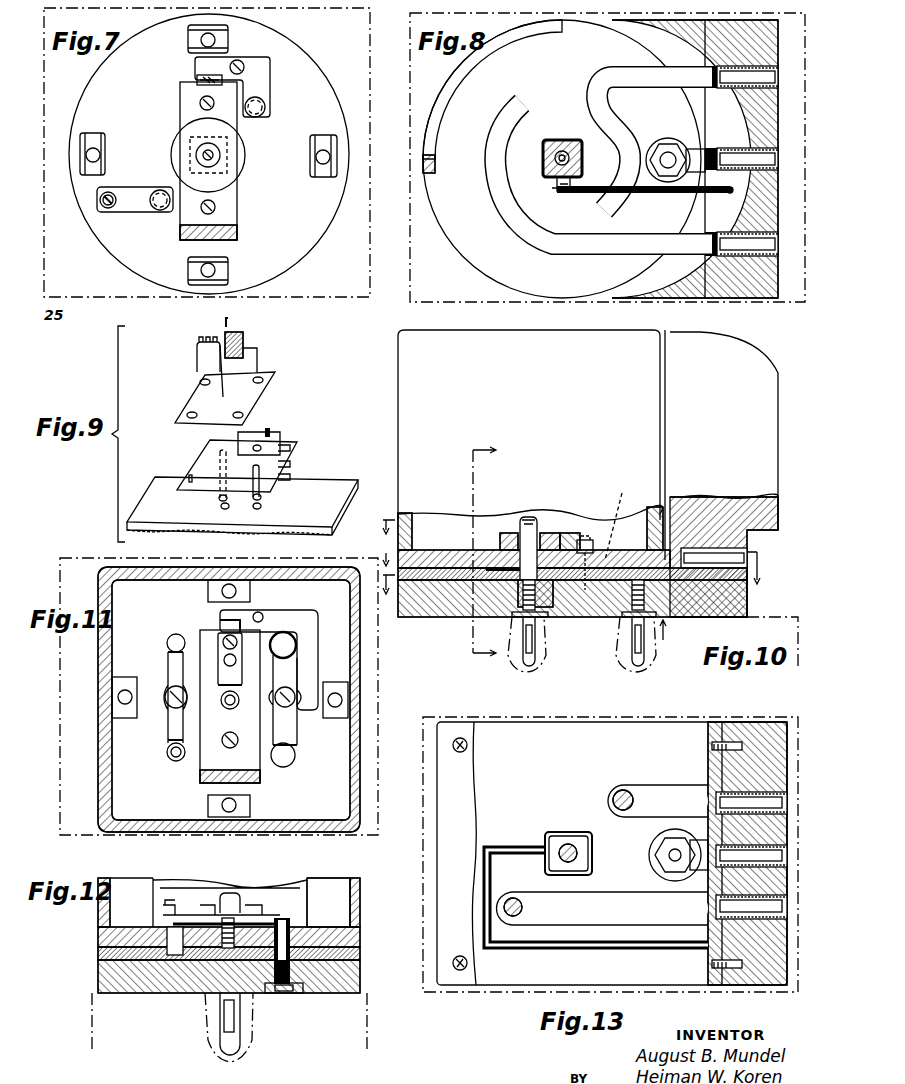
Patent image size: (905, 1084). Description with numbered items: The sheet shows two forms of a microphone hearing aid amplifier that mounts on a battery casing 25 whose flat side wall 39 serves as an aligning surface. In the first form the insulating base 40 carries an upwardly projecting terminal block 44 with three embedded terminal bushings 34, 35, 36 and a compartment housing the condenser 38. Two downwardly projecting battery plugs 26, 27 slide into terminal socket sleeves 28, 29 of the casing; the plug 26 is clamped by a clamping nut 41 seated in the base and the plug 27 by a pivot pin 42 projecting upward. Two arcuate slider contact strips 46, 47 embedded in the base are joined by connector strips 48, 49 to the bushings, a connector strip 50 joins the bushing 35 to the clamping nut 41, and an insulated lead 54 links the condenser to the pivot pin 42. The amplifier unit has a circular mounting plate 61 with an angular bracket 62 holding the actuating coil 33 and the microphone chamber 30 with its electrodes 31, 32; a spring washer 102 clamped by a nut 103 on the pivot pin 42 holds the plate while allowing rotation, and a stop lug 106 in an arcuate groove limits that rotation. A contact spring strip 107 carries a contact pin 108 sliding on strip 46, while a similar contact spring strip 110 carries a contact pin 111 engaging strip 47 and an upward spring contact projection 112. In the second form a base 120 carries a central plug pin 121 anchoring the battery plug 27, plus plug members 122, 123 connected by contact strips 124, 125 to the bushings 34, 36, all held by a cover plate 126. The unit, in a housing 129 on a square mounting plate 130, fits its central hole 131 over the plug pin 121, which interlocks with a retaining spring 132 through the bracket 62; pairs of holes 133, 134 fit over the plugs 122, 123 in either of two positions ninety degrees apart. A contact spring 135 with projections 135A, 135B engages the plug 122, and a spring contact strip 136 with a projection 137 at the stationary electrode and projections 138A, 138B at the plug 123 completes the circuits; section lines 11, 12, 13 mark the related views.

In FIG. 10, the section line 11— 11 is at (523, 594).
In FIG. 10, the section line 12— 12 is at (495, 557).
In FIG. 10, the section line 13— 13 is at (574, 564).
In FIG. 8, the battery casing 25 is at (418, 297).
In FIG. 10, the battery casing 25 is at (765, 617).
In FIG. 11, the battery casing 25 is at (84, 689).
In FIG. 12, the battery casing 25 is at (367, 1022).
In FIG. 9, the battery plug 26 is at (262, 497).
In FIG. 10, the battery plug 26 is at (650, 671).
In FIG. 9, the battery plug 27 is at (218, 498).
In FIG. 10, the battery plug 27 is at (540, 671).
In FIG. 12, the battery plug 27 is at (243, 1043).
In FIG. 9, the terminal socket sleeve 28 is at (262, 506).
In FIG. 9, the terminal socket sleeve 29 is at (220, 506).
In FIG. 9, the amplifier microphone chamber 30 is at (244, 333).
In FIG. 9, the stationary microphone electrode 31 is at (246, 345).
In FIG. 9, the vibratory diaphragm electrode 32 is at (228, 319).
In FIG. 9, the actuating coil 33 is at (215, 333).
In FIG. 8, the terminal bushing 34 is at (778, 247).
In FIG. 9, the terminal bushing 34 is at (292, 477).
In FIG. 13, the terminal bushing 34 is at (787, 908).
In FIG. 8, the terminal bushing 35 is at (778, 163).
In FIG. 9, the terminal bushing 35 is at (292, 464).
In FIG. 10, the terminal bushing 35 is at (750, 557).
In FIG. 13, the terminal bushing 35 is at (787, 856).
In FIG. 8, the terminal bushing 36 is at (778, 84).
In FIG. 9, the terminal bushing 36 is at (292, 449).
In FIG. 13, the terminal bushing 36 is at (787, 802).
In FIG. 9, the condenser 38 is at (272, 430).
In FIG. 8, the flat side wall 39 is at (752, 14).
In FIG. 11, the flat side wall 39 is at (90, 560).
In FIG. 12, the flat side wall 39 is at (92, 1024).
In FIG. 8, the base 40 is at (463, 257).
In FIG. 8, the clamping nut 41 is at (671, 150).
In FIG. 13, the clamping nut 41 is at (678, 855).
In FIG. 8, the pivot pin 42 is at (545, 171).
In FIG. 8, the terminal block 44 is at (778, 202).
In FIG. 10, the terminal block 44 is at (760, 548).
In FIG. 13, the terminal block 44 is at (778, 978).
In FIG. 8, the arcuate slider contact strip 46 is at (486, 163).
In FIG. 8, the arcuate slider contact strip 47 is at (630, 130).
In FIG. 8, the connector strip 48 is at (628, 255).
In FIG. 8, the connector strip 49 is at (646, 68).
In FIG. 8, the connector strip 50 is at (696, 149).
In FIG. 8, the insulated lead 54 is at (690, 194).
In FIG. 13, the insulated lead 54 is at (588, 950).
In FIG. 7, the mounting plate 61 is at (113, 255).
In FIG. 7, the angular bracket 62 is at (238, 232).
In FIG. 10, the angular bracket 62 is at (565, 530).
In FIG. 11, the angular bracket 62 is at (248, 782).
In FIG. 12, the angular bracket 62 is at (312, 908).
In FIG. 7, the spring washer 102 is at (243, 162).
In FIG. 7, the nut 103 is at (199, 157).
In FIG. 8, the stop lug 106 is at (427, 164).
In FIG. 7, the contact spring strip 107 is at (140, 197).
In FIG. 8, the contact spring strip 107 is at (470, 74).
In FIG. 7, the contact pin 108 is at (165, 211).
In FIG. 7, the contact spring strip 110 is at (268, 74).
In FIG. 7, the contact pin 111 is at (257, 117).
In FIG. 7, the spring contact projection 112 is at (205, 78).
In FIG. 9, the base 120 is at (212, 445).
In FIG. 10, the base 120 is at (440, 618).
In FIG. 12, the base 120 is at (98, 970).
In FIG. 13, the base 120 is at (608, 726).
In FIG. 9, the plug pin 121 is at (221, 466).
In FIG. 10, the plug pin 121 is at (533, 517).
In FIG. 11, the plug pin 121 is at (237, 700).
In FIG. 12, the plug pin 121 is at (240, 903).
In FIG. 13, the plug pin 121 is at (570, 846).
In FIG. 9, the plug member 122 is at (190, 474).
In FIG. 11, the plug member 122 is at (176, 762).
In FIG. 12, the plug member 122 is at (283, 918).
In FIG. 13, the plug member 122 is at (526, 888).
In FIG. 9, the plug member 123 is at (257, 444).
In FIG. 10, the plug member 123 is at (623, 523).
In FIG. 11, the plug member 123 is at (292, 640).
In FIG. 13, the plug member 123 is at (628, 790).
In FIG. 9, the contact strip 124 is at (248, 490).
In FIG. 12, the contact strip 124 is at (304, 985).
In FIG. 13, the contact strip 124 is at (634, 888).
In FIG. 9, the contact strip 125 is at (282, 440).
In FIG. 13, the contact strip 125 is at (678, 790).
In FIG. 10, the cover plate 126 is at (568, 546).
In FIG. 12, the cover plate 126 is at (98, 951).
In FIG. 13, the cover plate 126 is at (471, 794).
In FIG. 10, the housing 129 is at (402, 368).
In FIG. 10, the mounting plate 130 is at (465, 556).
In FIG. 11, the mounting plate 130 is at (318, 792).
In FIG. 12, the mounting plate 130 is at (128, 926).
In FIG. 10, the central hole 131 is at (496, 545).
In FIG. 10, the retaining spring 132 is at (510, 530).
In FIG. 11, the retaining spring 132 is at (218, 692).
In FIG. 12, the retaining spring 132 is at (215, 914).
In FIG. 9, the holes 133 is at (188, 412).
In FIG. 11, the holes 133 is at (178, 636).
In FIG. 9, the holes 134 is at (263, 380).
In FIG. 11, the holes 134 is at (288, 632).
In FIG. 11, the contact spring 135 is at (168, 722).
In FIG. 12, the contact spring 135 is at (270, 922).
In FIG. 11, the contact spring projection 135A is at (168, 748).
In FIG. 11, the contact spring projection 135B is at (168, 655).
In FIG. 11, the spring contact strip 136 is at (278, 612).
In FIG. 11, the contact spring projection 137 is at (225, 628).
In FIG. 11, the contact spring projection 138A is at (292, 660).
In FIG. 11, the contact spring projection 138B is at (286, 746).